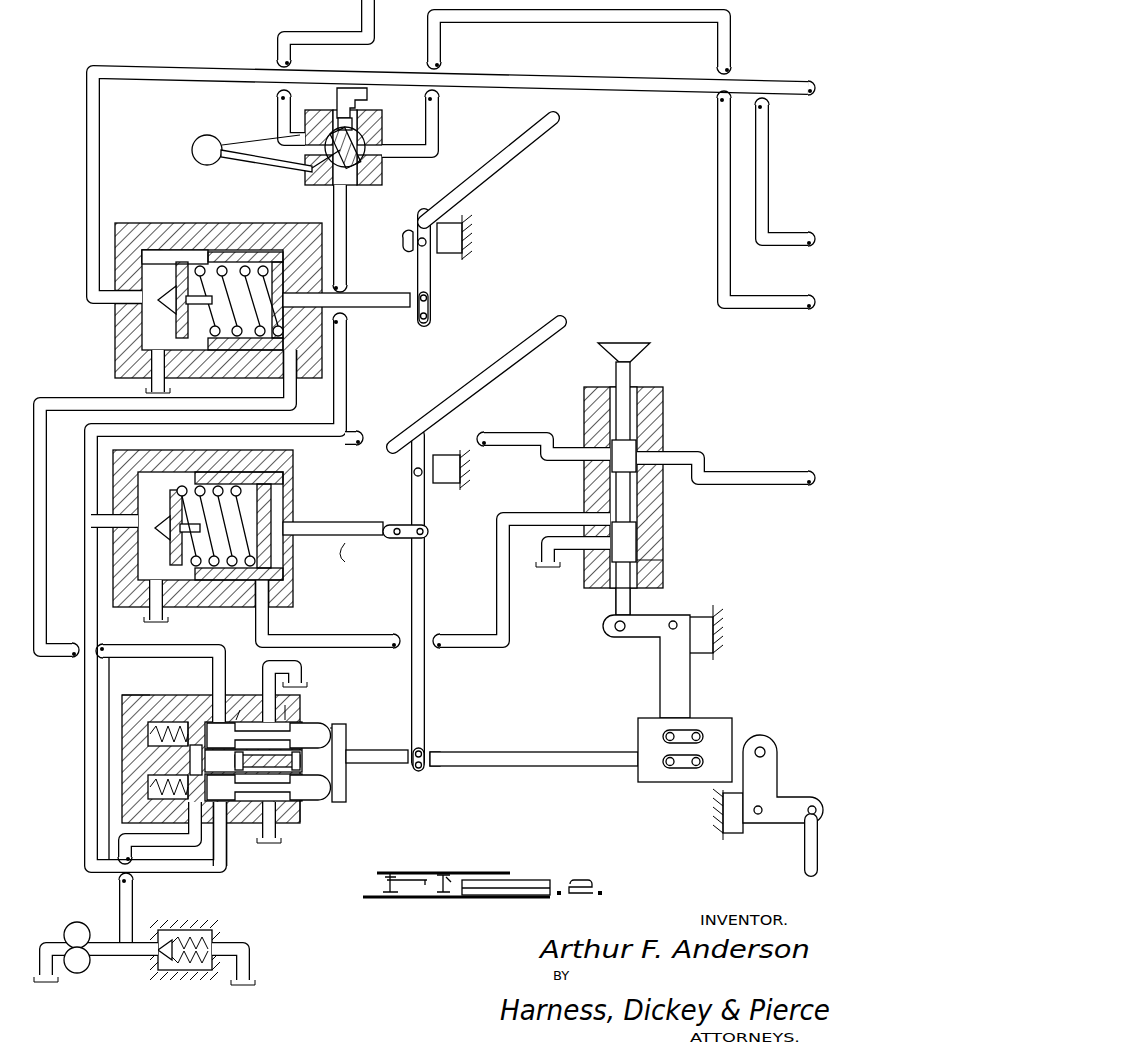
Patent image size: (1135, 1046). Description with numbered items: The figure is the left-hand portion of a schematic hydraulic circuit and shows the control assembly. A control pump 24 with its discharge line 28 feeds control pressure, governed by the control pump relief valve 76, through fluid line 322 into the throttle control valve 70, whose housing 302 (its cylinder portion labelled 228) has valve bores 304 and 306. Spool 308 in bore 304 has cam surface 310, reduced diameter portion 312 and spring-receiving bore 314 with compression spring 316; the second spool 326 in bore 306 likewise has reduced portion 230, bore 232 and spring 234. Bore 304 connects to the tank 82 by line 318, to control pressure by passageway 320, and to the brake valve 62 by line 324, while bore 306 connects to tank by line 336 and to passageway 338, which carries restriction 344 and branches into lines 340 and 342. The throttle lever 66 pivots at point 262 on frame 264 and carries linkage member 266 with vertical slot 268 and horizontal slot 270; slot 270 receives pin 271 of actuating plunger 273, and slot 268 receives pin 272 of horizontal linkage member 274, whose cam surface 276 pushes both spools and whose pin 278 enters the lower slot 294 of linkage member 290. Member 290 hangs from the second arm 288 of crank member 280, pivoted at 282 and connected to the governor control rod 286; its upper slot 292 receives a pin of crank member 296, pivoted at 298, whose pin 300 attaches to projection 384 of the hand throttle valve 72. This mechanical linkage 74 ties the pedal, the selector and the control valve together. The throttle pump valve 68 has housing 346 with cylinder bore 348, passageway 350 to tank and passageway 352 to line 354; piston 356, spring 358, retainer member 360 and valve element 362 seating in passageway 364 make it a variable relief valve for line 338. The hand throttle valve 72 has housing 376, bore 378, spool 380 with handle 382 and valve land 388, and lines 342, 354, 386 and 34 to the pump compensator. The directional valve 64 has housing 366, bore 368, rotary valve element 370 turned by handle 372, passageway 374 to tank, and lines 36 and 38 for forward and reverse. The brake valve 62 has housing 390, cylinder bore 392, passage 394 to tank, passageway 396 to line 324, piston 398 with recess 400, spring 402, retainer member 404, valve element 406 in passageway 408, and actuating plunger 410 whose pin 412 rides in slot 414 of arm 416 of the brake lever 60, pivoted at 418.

The control pump 24 is at (86, 970).
The pump outlet conduit 28 is at (140, 958).
The fluid line 34 is at (742, 477).
The fluid line 36 is at (439, 110).
The fluid line 38 is at (280, 99).
The brake lever 60 is at (520, 150).
The brake valve 62 is at (185, 220).
The directional valve 64 is at (384, 172).
The throttle lever 66 is at (490, 362).
The throttle pump valve 68 is at (301, 475).
The throttle control valve 70 is at (308, 825).
The hand throttle valve 72 is at (665, 515).
The mechanical linkage 74 is at (617, 742).
The control pump relief valve 76 is at (217, 927).
The fluid reservoir 82 is at (363, 104).
The cylinder 228 is at (302, 805).
The reduced diameter portion 230 is at (267, 761).
The spring-receiving bore 232 is at (186, 792).
The compression spring 234 is at (150, 788).
The pivot point 262 is at (413, 472).
The vehicle frame 264 is at (472, 240).
The linkage member 266 is at (432, 600).
The vertical slot 268 is at (432, 752).
The horizontal slot 270 is at (397, 540).
The pin 271 is at (425, 532).
The pin 272 is at (426, 772).
The actuating plunger 273 is at (335, 553).
The linkage member 274 is at (560, 768).
The cam surface 276 is at (370, 750).
The pin 278 is at (668, 764).
The crank member 280 is at (770, 775).
The pivot 282 is at (755, 815).
The governor control rod 286 is at (805, 858).
The second arm 288 is at (768, 742).
The linkage member 290 is at (722, 722).
The upper slot 292 is at (698, 734).
The lower slot 294 is at (668, 737).
The crank member 296 is at (665, 660).
The pivot 298 is at (680, 620).
The pin 300 is at (614, 630).
The housing 302 is at (147, 694).
The valve bore 304 is at (286, 712).
The valve bore 306 is at (268, 787).
The spool 308 is at (268, 735).
The cam surface 310 is at (312, 722).
The reduced diameter portion 312 is at (242, 708).
The spring-receiving bore 314 is at (193, 722).
The compression spring 316 is at (150, 735).
The fluid line 318 is at (264, 669).
The passageway 320 is at (188, 758).
The fluid line 322 is at (168, 846).
The fluid line 324 is at (268, 412).
The second spool 326 is at (348, 770).
The fluid line 336 is at (266, 840).
The passageway 338 is at (348, 208).
The branch line 340 is at (113, 523).
The branch line 342 is at (514, 433).
The restriction 344 is at (228, 845).
The housing 346 is at (280, 606).
The cylinder bore 348 is at (175, 480).
The passageway 350 is at (142, 600).
The passageway 352 is at (240, 602).
The fluid line 354 is at (375, 636).
The piston 356 is at (93, 160).
The compression spring 358 is at (276, 522).
The retainer member 360 is at (172, 500).
The valve element 362 is at (165, 540).
The passageway 364 is at (160, 530).
The housing 366 is at (375, 152).
The cylinder bore 368 is at (362, 140).
The rotary valve element 370 is at (332, 170).
The handle 372 is at (250, 140).
The passageway 374 is at (340, 88).
The housing 376 is at (655, 566).
The bore 378 is at (632, 500).
The spool 380 is at (614, 466).
The handle 382 is at (626, 342).
The projection 384 is at (614, 612).
The fluid line 386 is at (556, 543).
The valve land 388 is at (640, 546).
The housing 390 is at (176, 300).
The cylinder bore 392 is at (155, 248).
The passage 394 is at (150, 364).
The passageway 396 is at (300, 366).
The piston 398 is at (214, 265).
The recess 400 is at (216, 350).
The compression spring 402 is at (258, 265).
The retainer member 404 is at (150, 262).
The valve element 406 is at (170, 312).
The passageway 408 is at (115, 296).
The actuating plunger 410 is at (368, 307).
The pin 412 is at (429, 300).
The slot 414 is at (429, 316).
The arm 416 is at (436, 275).
The pivot 418 is at (417, 243).